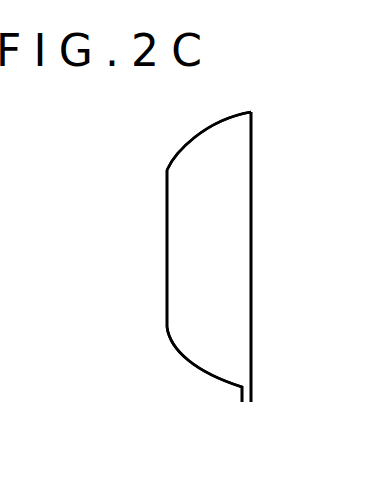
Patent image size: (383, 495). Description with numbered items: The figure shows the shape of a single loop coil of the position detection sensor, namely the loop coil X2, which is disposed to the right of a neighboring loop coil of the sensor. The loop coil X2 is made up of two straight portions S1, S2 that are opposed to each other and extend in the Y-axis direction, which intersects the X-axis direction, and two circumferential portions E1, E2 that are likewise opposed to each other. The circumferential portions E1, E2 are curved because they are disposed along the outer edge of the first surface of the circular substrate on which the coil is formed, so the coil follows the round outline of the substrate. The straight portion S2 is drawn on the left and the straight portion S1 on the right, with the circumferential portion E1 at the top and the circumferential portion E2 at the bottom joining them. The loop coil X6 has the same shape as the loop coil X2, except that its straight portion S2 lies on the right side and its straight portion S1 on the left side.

The circumferential portion E1 is at (198, 132).
The circumferential portion E2 is at (195, 363).
The straight portion S1 is at (252, 255).
The straight portion S2 is at (167, 252).
The loop coil X2 is at (206, 264).
The loop coil X6 is at (232, 277).